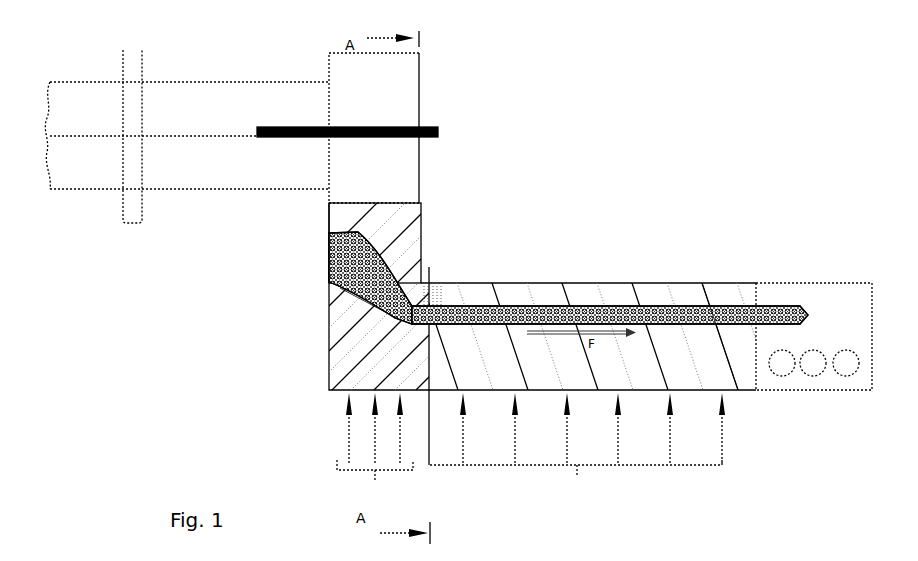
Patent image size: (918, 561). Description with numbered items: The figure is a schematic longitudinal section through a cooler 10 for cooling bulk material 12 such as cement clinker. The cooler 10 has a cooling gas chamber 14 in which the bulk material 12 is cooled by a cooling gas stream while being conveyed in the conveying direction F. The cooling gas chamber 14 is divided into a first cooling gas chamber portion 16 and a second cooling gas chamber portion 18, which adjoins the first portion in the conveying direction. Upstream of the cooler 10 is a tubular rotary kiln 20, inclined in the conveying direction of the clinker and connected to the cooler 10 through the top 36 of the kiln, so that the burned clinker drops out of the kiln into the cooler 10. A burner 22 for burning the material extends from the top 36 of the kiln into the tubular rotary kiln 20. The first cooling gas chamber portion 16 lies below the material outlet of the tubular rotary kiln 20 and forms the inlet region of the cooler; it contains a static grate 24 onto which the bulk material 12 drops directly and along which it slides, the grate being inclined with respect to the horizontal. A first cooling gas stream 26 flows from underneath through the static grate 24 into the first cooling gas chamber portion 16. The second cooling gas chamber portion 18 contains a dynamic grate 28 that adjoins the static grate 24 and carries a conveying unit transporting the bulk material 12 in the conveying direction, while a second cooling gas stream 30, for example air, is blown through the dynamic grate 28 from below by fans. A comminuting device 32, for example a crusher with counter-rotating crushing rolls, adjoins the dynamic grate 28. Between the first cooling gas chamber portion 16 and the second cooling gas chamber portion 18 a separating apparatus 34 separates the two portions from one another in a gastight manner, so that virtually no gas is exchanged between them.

The cooler 10 is at (672, 112).
The bulk material 12 is at (485, 300).
The cooling gas chamber 14 is at (535, 300).
The first cooling gas chamber portion 16 is at (347, 212).
The second cooling gas chamber portion 18 is at (546, 300).
The tubular rotary kiln 20 is at (308, 81).
The burner 22 is at (440, 135).
The static grate 24 is at (356, 300).
The first cooling gas stream 26 is at (375, 450).
The dynamic grate 28 is at (720, 326).
The second cooling gas stream 30 is at (577, 451).
The comminuting device 32 is at (829, 332).
The separating apparatus 34 is at (433, 272).
The top of the kiln 36 is at (418, 104).